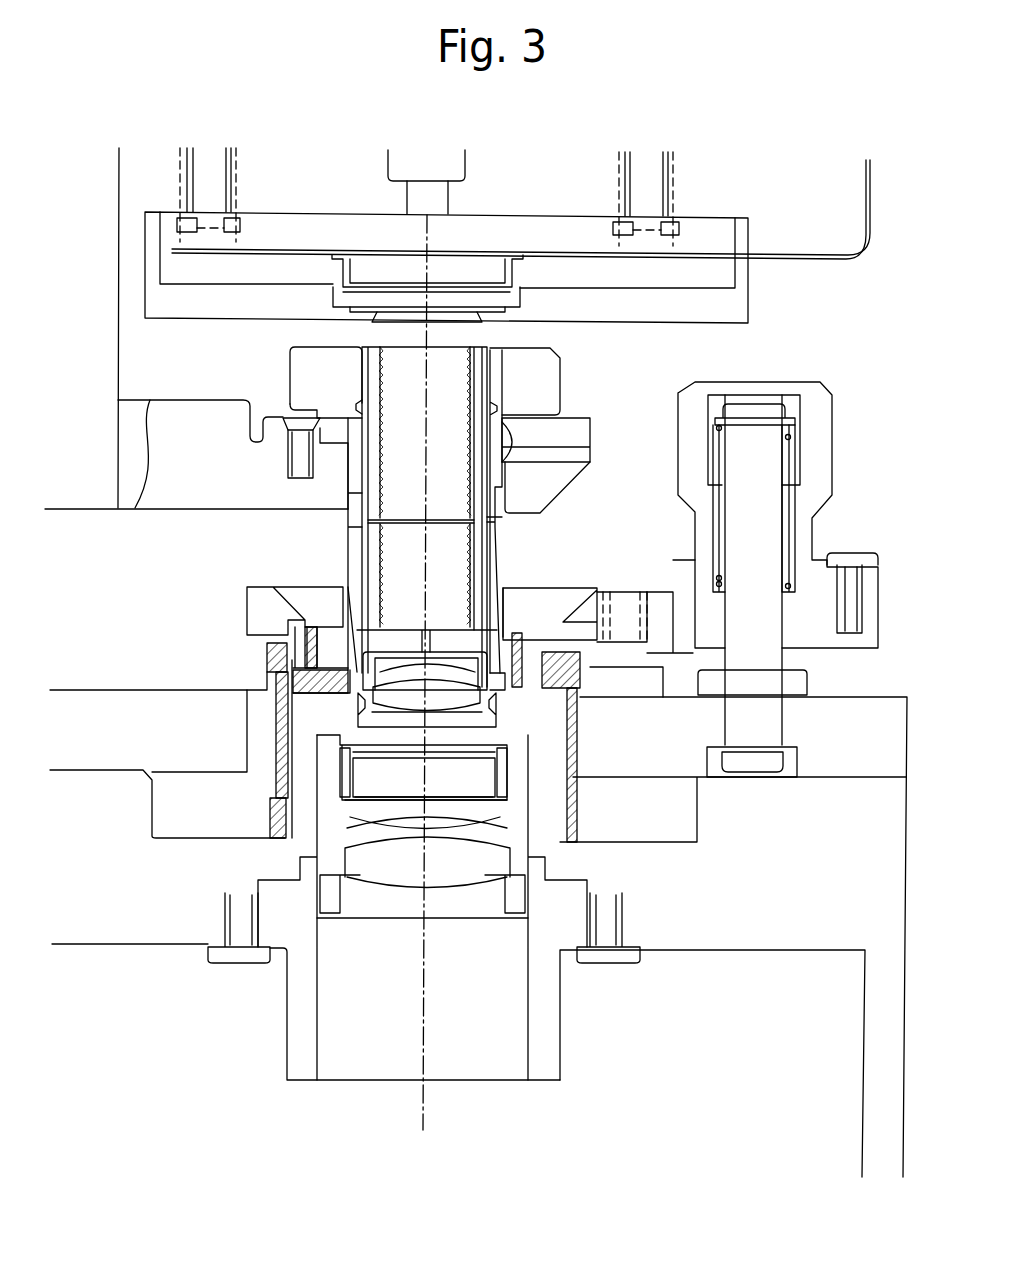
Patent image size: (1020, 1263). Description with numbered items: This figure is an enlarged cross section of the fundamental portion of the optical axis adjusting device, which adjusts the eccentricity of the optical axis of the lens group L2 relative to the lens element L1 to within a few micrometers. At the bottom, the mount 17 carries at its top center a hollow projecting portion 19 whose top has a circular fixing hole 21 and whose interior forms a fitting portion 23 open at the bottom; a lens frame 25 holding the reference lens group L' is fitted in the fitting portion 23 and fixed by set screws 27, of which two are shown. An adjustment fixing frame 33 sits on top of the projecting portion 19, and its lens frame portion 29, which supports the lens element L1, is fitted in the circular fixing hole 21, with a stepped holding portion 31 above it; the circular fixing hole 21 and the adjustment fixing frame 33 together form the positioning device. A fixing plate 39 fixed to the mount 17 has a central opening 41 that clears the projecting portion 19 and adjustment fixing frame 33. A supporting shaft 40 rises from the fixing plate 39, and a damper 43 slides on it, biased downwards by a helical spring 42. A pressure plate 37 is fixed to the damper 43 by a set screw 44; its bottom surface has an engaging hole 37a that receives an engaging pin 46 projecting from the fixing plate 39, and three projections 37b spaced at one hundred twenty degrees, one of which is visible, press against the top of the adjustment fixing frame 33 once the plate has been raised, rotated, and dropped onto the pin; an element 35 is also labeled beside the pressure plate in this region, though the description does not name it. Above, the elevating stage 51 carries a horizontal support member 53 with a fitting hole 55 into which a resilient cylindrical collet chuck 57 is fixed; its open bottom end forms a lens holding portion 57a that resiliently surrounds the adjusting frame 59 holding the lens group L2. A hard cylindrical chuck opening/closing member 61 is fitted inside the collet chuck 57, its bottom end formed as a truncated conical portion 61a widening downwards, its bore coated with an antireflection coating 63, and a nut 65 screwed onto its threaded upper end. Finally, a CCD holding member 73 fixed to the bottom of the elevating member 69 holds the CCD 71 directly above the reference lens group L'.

The mount 17 is at (866, 1062).
The projecting portion 19 is at (282, 790).
The circular fixing hole 21 is at (395, 726).
The fitting portion 23 is at (530, 822).
The lens frame 25 is at (300, 1030).
The set screws 27 is at (228, 954).
The lens frame portion 29 is at (490, 717).
The stepped holding portion 31 is at (342, 685).
The adjustment fixing frame 33 is at (302, 608).
The support block 35 is at (569, 605).
The pressure plate 37 is at (252, 604).
The engaging hole 37a is at (660, 592).
The projections 37b is at (300, 585).
The fixing plate 39 is at (136, 690).
The supporting shaft 40 is at (757, 478).
The opening 41 is at (255, 715).
The helical spring 42 is at (792, 430).
The damper 43 is at (698, 522).
The set screw 44 is at (851, 566).
The engaging pin 46 is at (617, 592).
The elevating stage 51 is at (97, 509).
The horizontal support member 53 is at (207, 413).
The fitting hole 55 is at (503, 414).
The collet chuck 57 is at (348, 535).
The lens holding portion 57a is at (527, 672).
The adjusting frame 59 is at (452, 668).
The chuck opening/closing member 61 is at (484, 378).
The truncated conical portion 61a is at (370, 600).
The antireflection coating 63 is at (468, 440).
The nut 65 is at (308, 366).
The elevating member 69 is at (827, 262).
The CCD 71 is at (495, 279).
The CCD holding member 73 is at (750, 317).
The lens element L1 is at (448, 725).
The lens group L2 is at (388, 668).
The reference lens group L' is at (380, 949).